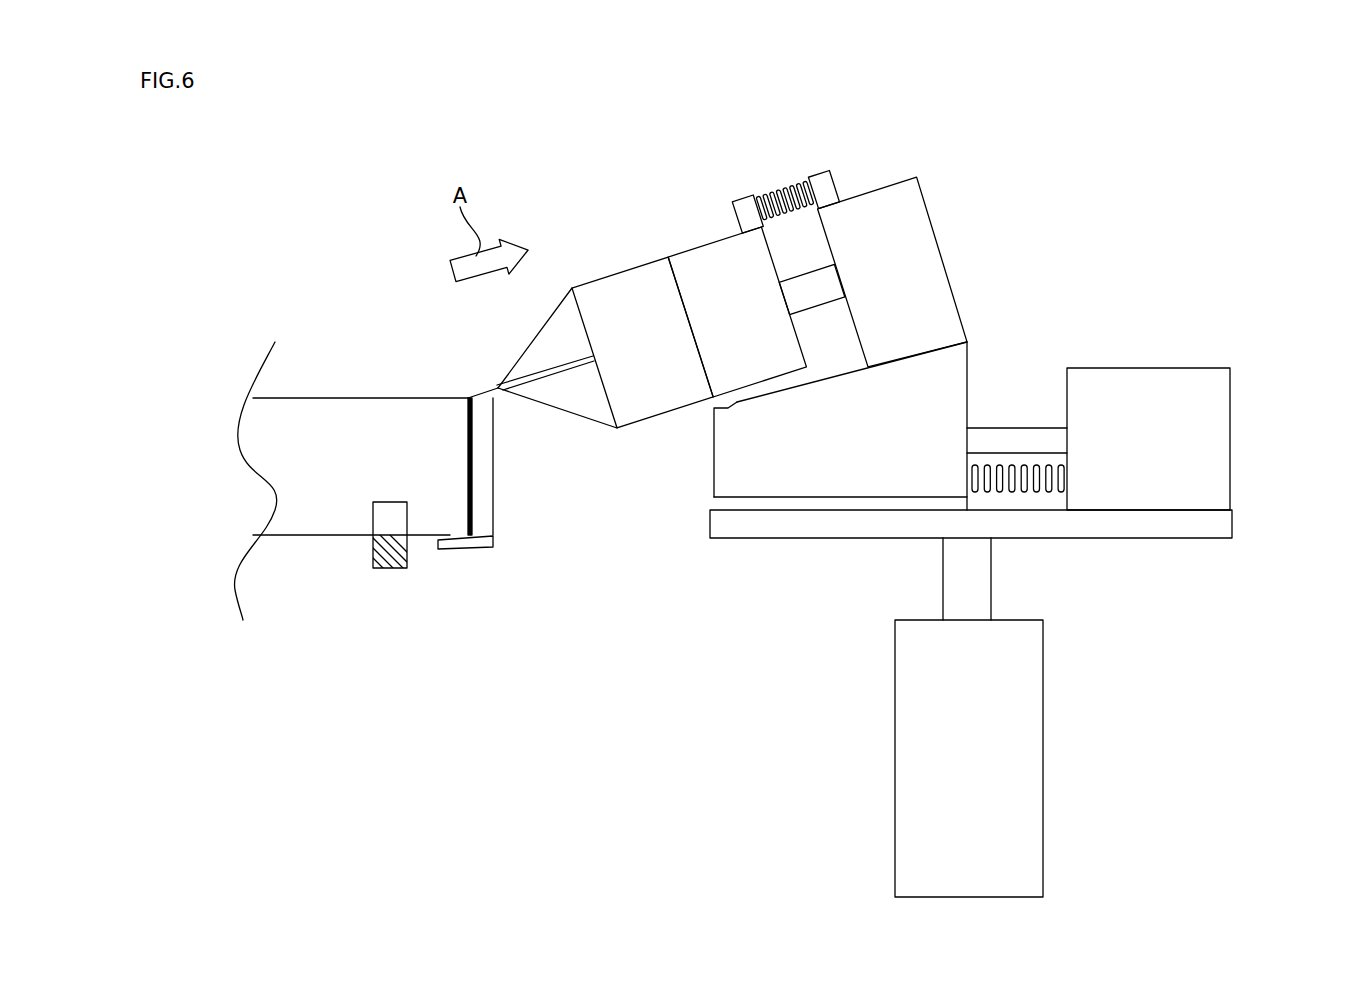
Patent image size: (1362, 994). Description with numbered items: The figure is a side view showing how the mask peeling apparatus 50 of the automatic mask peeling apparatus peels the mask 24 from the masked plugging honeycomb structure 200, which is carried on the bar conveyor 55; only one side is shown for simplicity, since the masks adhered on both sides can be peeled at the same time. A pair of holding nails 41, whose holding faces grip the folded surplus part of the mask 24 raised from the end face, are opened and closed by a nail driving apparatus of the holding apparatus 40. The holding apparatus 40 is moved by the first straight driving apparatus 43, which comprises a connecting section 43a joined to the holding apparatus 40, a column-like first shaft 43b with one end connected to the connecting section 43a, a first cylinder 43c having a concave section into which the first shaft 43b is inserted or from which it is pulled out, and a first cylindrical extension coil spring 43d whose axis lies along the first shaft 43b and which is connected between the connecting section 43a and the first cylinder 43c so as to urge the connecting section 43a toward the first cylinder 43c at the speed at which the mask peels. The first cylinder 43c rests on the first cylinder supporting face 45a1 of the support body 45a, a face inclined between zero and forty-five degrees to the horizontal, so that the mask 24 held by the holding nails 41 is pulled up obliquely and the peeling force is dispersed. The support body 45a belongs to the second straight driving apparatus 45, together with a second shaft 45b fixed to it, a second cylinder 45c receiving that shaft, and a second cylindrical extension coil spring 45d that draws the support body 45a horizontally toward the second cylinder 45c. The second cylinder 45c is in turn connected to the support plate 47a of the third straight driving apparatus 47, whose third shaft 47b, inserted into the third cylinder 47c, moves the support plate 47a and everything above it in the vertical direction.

The masked plugging honeycomb structure 200 is at (357, 392).
The mask 24 is at (483, 513).
The bar conveyor 55 is at (385, 513).
The mask peeling apparatus 50 is at (906, 472).
The holding apparatus 40 is at (568, 280).
The holding nails 41 is at (550, 348).
The first straight driving apparatus 43 is at (834, 222).
The connecting section 43a is at (693, 270).
The first shaft 43b is at (813, 283).
The first cylinder 43c is at (890, 262).
The first cylindrical extension coil spring 43d is at (773, 193).
The second straight driving apparatus 45 is at (970, 408).
The support body 45a is at (735, 483).
The first cylinder supporting face 45a1 is at (733, 400).
The second shaft 45b is at (1002, 442).
The second cylinder 45c is at (1192, 443).
The second cylindrical extension coil spring 45d is at (1027, 467).
The third straight driving apparatus 47 is at (966, 703).
The support plate 47a is at (748, 527).
The third shaft 47b is at (968, 597).
The third cylinder 47c is at (925, 742).